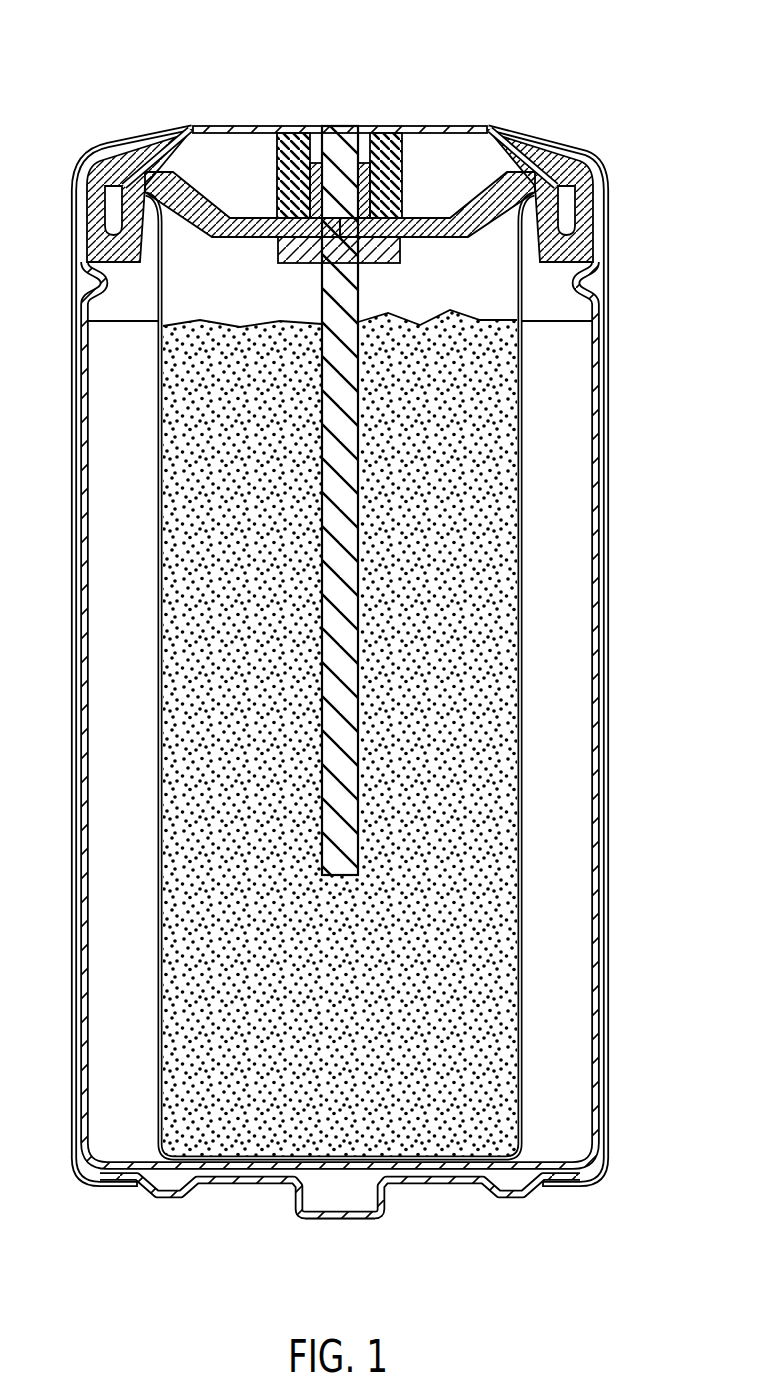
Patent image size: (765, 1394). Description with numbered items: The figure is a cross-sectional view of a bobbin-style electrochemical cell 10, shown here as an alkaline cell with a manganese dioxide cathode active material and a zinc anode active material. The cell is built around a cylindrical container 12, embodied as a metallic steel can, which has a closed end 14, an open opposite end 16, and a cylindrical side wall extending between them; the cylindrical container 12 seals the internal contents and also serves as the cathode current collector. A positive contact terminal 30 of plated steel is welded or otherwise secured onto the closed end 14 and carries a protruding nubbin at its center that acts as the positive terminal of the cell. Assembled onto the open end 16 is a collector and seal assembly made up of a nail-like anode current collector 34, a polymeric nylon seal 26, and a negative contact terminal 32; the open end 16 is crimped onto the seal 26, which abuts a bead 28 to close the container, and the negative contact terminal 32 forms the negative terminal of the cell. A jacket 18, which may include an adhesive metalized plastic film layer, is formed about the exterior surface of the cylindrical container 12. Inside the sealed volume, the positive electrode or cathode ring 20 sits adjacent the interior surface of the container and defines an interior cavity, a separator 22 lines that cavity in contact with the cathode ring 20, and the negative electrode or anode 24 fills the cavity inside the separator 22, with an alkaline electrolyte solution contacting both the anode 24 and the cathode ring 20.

The bobbin-style electrochemical cell 10 is at (494, 80).
The cylindrical container 12 is at (598, 363).
The closed end 14 is at (520, 1165).
The open opposite end 16 is at (549, 155).
The jacket 18 is at (605, 425).
The cathode ring 20 is at (580, 468).
The separator 22 is at (523, 537).
The anode 24 is at (493, 598).
The seal 26 is at (588, 233).
The bead 28 is at (578, 278).
The positive contact terminal 30 is at (342, 1222).
The negative contact terminal 32 is at (252, 125).
The anode current collector 34 is at (337, 131).